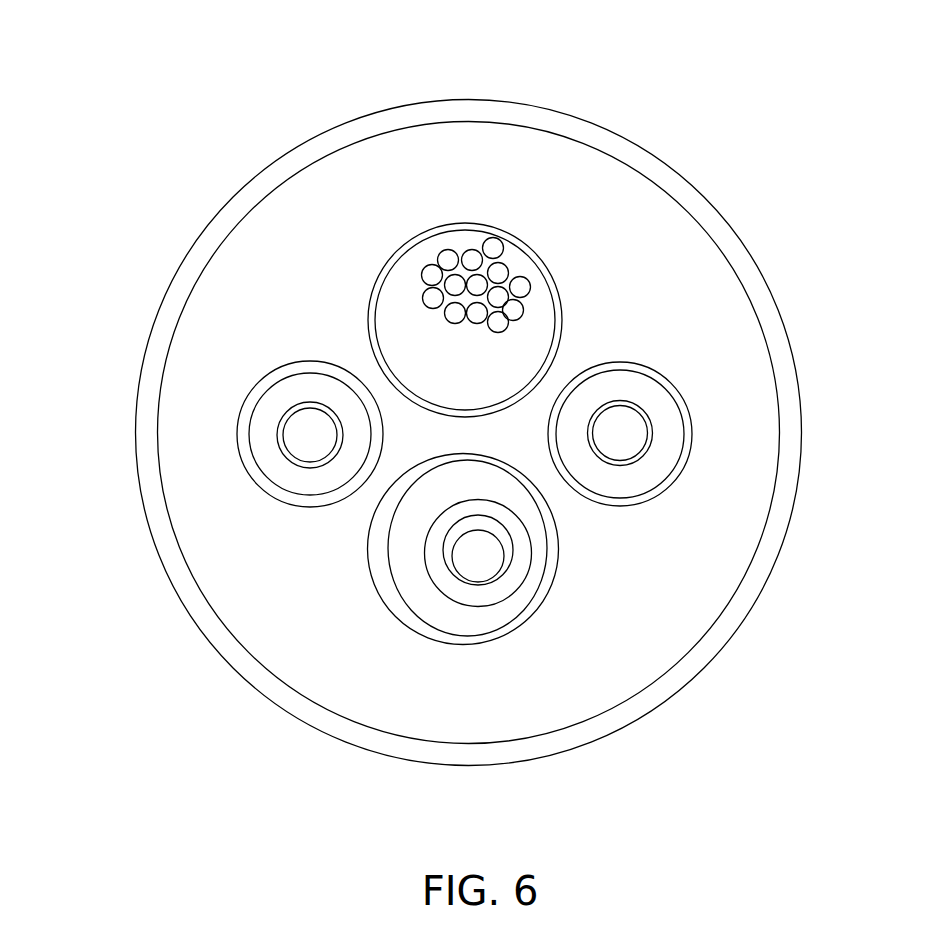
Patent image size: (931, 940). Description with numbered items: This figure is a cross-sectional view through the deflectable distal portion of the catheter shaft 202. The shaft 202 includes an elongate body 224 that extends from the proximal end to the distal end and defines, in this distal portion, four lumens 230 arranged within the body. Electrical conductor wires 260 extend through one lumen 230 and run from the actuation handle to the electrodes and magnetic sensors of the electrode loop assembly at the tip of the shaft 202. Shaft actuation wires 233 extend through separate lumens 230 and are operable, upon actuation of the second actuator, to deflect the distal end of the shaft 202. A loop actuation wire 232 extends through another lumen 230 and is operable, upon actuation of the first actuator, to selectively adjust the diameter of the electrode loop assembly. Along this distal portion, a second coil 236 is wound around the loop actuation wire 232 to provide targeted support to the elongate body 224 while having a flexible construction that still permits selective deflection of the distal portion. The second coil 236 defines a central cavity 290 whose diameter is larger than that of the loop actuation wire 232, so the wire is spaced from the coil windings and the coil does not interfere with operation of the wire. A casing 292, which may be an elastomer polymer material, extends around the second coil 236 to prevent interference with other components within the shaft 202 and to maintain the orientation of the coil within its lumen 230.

The shaft 202 is at (643, 88).
The elongate body 224 is at (197, 242).
The lumen 230 is at (385, 257).
The shaft actuation wire 233 is at (310, 437).
The electrical conductor wire 260 is at (520, 287).
The casing 292 is at (415, 573).
The second coil 236 is at (493, 605).
The central cavity 290 is at (512, 545).
The loop actuation wire 232 is at (467, 558).